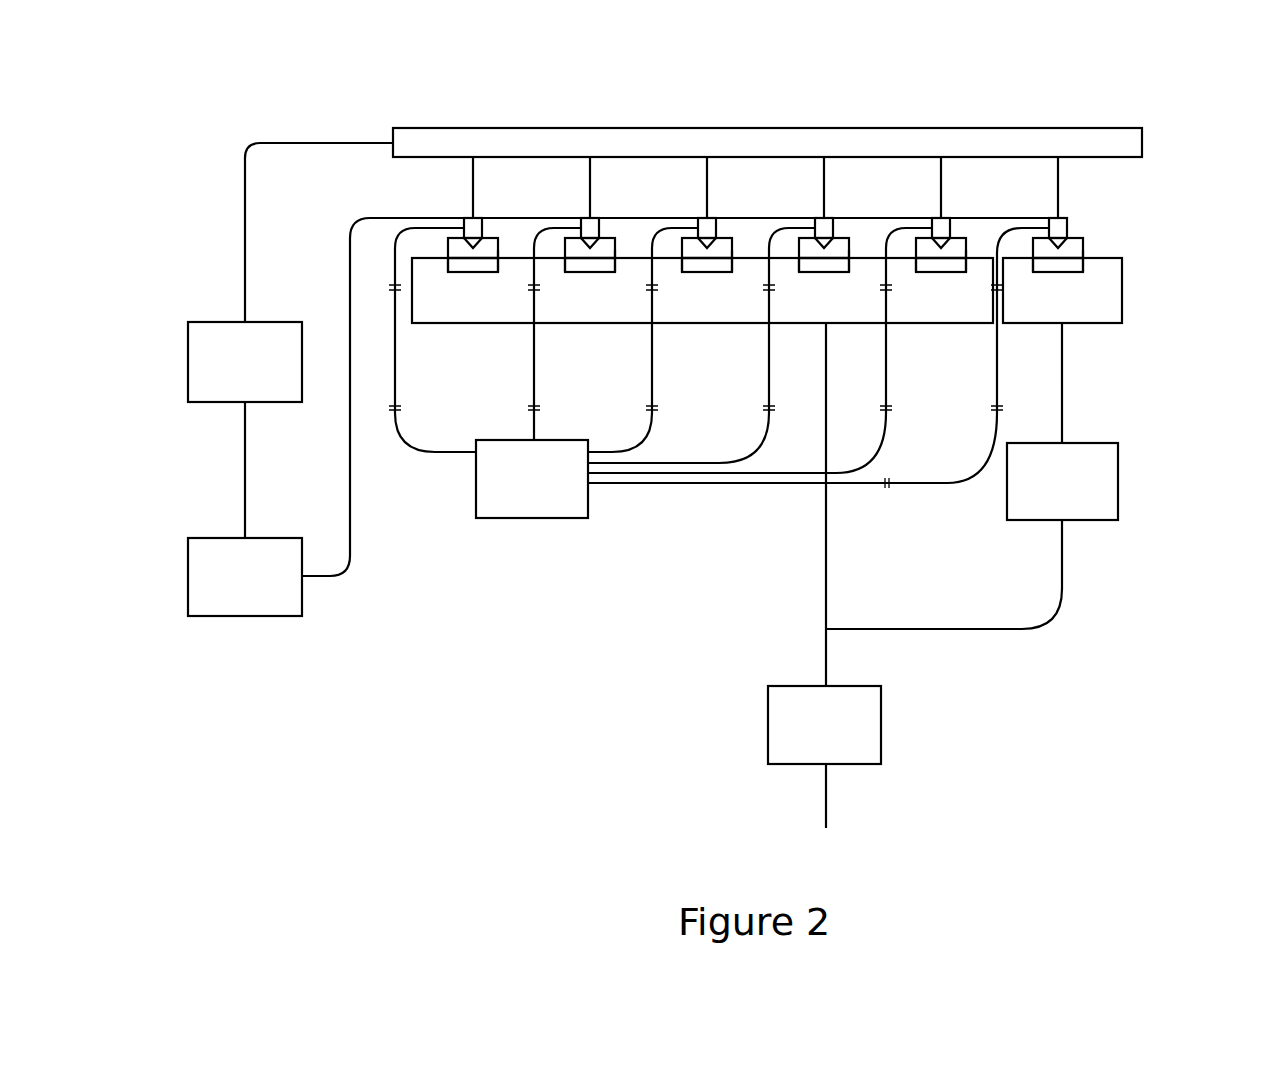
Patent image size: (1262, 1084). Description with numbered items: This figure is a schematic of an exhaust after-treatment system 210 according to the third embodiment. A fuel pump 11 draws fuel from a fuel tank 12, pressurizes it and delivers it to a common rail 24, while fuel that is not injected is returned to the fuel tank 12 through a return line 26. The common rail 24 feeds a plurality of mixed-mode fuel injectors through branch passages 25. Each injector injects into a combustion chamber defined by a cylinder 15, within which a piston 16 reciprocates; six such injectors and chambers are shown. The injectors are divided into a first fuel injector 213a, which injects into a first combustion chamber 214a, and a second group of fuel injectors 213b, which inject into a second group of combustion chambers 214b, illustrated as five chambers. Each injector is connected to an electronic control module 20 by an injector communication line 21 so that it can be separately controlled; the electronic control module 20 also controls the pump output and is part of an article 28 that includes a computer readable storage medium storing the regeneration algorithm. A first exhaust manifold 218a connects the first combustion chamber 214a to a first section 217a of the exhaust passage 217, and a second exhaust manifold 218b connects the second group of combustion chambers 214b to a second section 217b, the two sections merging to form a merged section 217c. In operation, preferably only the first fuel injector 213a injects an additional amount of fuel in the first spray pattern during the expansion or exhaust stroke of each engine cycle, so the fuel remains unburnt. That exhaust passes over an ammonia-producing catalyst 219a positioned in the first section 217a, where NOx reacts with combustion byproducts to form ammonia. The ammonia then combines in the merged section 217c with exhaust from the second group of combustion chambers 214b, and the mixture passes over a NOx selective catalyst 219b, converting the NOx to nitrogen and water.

The exhaust after-treatment system 210 is at (1146, 96).
The common rail 24 is at (743, 128).
The branch passages 25 is at (473, 192).
The fuel pump 11 is at (190, 322).
The fuel tank 12 is at (302, 598).
The return line 26 is at (350, 478).
The second group of fuel injectors 213b is at (487, 222).
The first fuel injector 213a is at (1067, 222).
The second group of combustion chambers 214b is at (495, 245).
The first combustion chamber 214a is at (1082, 246).
The piston 16 is at (453, 272).
The cylinder 15 is at (498, 256).
The injector communication line 21 is at (395, 358).
The second exhaust manifold 218b is at (442, 323).
The first exhaust manifold 218a is at (1122, 300).
The electronic control module 20 is at (497, 518).
The article 28 is at (588, 518).
The exhaust passage 217 is at (1062, 342).
The first section of exhaust passage 217a is at (1062, 388).
The second section of exhaust passage 217b is at (826, 538).
The merged section of exhaust passage 217c is at (826, 640).
The ammonia-producing catalyst 219a is at (1118, 478).
The NOx selective catalyst 219b is at (881, 715).